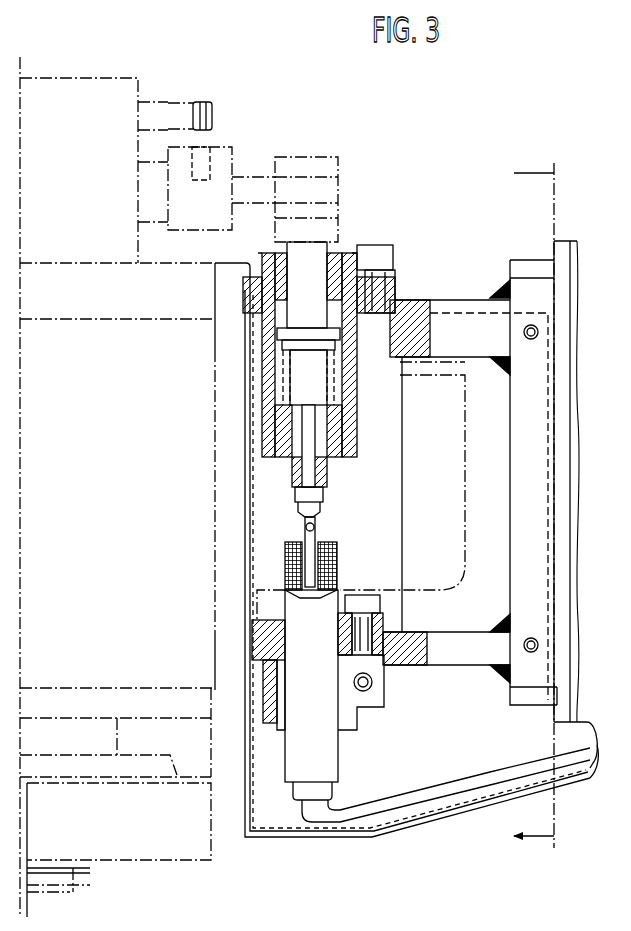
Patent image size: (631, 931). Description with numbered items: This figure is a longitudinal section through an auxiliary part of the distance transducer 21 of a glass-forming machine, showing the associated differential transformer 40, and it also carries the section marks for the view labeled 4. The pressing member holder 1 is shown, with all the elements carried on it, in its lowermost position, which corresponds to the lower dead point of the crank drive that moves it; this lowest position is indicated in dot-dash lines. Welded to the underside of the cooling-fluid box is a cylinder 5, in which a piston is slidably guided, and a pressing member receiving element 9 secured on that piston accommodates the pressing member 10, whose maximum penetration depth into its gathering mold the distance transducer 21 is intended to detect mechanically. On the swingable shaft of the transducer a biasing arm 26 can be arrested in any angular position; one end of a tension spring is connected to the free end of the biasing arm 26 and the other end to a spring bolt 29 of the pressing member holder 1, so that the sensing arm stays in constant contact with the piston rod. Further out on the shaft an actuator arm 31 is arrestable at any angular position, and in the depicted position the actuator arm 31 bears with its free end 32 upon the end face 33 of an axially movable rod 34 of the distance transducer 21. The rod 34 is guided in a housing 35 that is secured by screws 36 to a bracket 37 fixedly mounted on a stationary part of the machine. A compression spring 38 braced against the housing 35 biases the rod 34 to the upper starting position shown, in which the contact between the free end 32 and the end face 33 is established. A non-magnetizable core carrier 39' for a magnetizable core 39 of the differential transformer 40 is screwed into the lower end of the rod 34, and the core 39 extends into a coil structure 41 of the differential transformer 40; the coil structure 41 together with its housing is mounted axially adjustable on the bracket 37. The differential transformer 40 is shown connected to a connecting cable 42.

The pressing member holder 1 is at (146, 92).
The spring bolt 29 is at (197, 100).
The biasing arm 26 is at (230, 147).
The actuator arm 31 is at (302, 157).
The distance transducer 21 is at (356, 175).
The free end 32 is at (262, 249).
The end face 33 is at (320, 240).
The rod 34 is at (300, 305).
The compression spring 38 is at (295, 355).
The housing 35 is at (262, 388).
The core carrier 39' is at (248, 552).
The coil structure 41 is at (338, 568).
The core 39 is at (382, 700).
The differential transformer 40 is at (280, 756).
The screws 36 is at (385, 256).
The bracket 37 is at (444, 298).
The connecting cable 42 is at (425, 803).
The pressing member receiving element 9 is at (122, 722).
The cylinder 5 is at (198, 718).
The pressing member 10 is at (75, 890).
The section line 4 is at (534, 495).